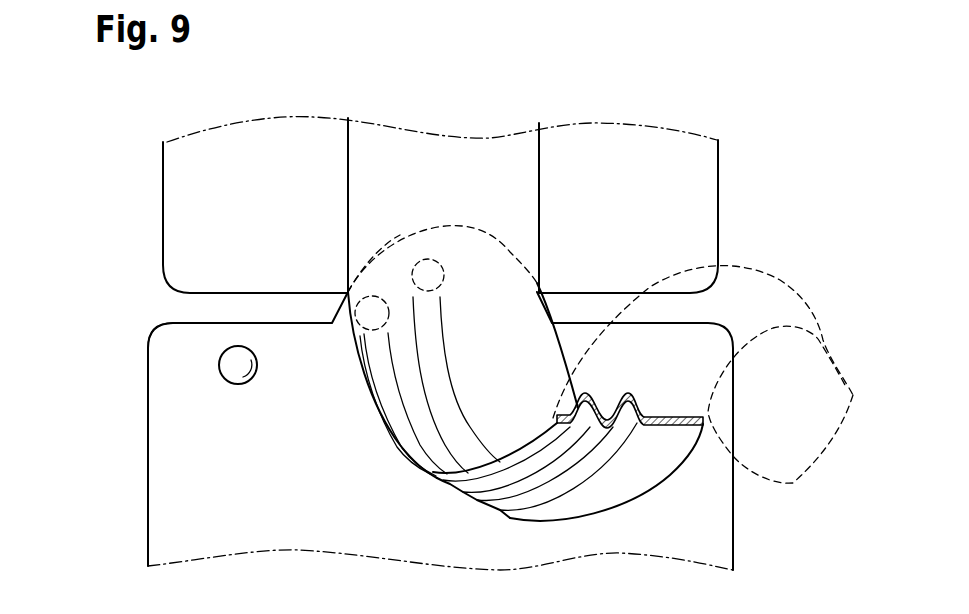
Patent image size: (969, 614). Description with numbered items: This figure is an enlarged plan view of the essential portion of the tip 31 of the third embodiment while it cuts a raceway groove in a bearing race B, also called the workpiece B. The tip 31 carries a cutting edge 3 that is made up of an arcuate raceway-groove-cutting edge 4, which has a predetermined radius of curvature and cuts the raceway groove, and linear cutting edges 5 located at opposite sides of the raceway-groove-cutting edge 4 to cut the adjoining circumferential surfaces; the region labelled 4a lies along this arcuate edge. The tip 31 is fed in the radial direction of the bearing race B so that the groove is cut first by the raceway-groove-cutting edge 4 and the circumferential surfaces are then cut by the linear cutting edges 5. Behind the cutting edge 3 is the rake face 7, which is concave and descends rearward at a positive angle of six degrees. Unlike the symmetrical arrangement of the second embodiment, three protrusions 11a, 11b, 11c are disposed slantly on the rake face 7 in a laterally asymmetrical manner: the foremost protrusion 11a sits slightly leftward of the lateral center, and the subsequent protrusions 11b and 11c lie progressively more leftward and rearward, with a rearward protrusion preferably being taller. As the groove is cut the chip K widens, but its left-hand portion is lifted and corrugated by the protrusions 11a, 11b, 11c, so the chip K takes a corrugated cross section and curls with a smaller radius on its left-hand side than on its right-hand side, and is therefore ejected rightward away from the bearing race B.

The bearing race B is at (163, 235).
The tip 31 is at (136, 312).
The cutting edge 3 is at (625, 170).
The raceway-groove-cutting edge 4 is at (510, 250).
The roll core 4a is at (375, 257).
The linear cutting edge 5 is at (579, 325).
The rake face 7 is at (688, 525).
The protrusion 11a is at (440, 270).
The protrusion 11b is at (360, 330).
The protrusion 11c is at (232, 383).
The chip K is at (383, 425).